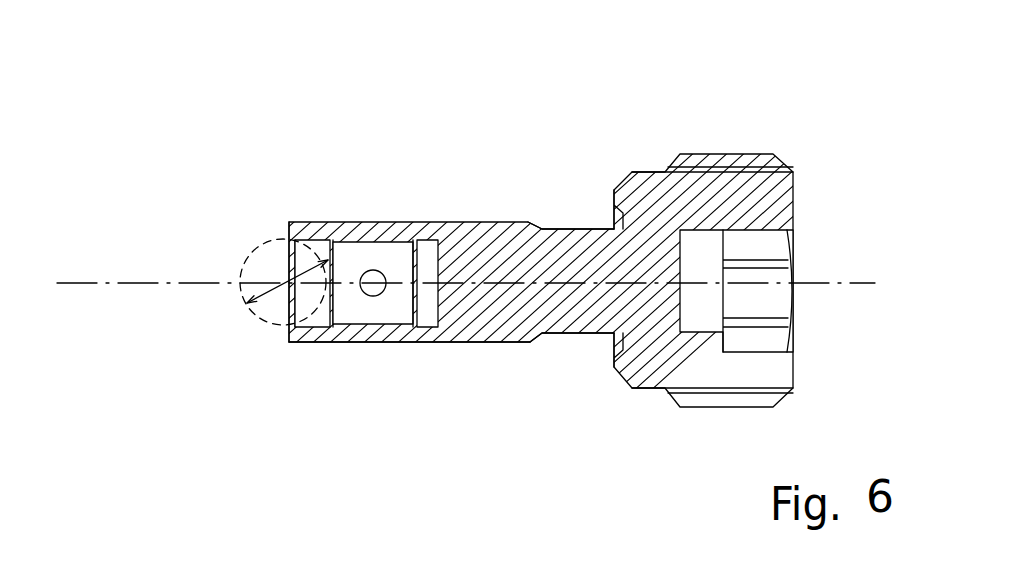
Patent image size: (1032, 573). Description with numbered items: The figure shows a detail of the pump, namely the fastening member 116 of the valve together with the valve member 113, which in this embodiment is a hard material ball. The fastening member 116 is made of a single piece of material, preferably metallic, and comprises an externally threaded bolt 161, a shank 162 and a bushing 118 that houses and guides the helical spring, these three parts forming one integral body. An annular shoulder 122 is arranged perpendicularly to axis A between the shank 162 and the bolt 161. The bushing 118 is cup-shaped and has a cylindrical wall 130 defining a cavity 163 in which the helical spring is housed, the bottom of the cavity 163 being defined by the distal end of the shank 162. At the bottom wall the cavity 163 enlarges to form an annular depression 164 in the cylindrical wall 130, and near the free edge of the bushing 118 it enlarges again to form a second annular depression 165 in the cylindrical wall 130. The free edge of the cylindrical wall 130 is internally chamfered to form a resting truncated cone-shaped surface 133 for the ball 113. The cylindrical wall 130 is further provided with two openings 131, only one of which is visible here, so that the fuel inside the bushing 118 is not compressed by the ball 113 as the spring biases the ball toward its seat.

The fastening member 116 is at (547, 123).
The bushing 118 is at (367, 230).
The annular shoulder 122 is at (614, 198).
The bolt 161 is at (760, 198).
The shank 162 is at (502, 313).
The cylindrical wall 130 is at (373, 332).
The openings 131 is at (382, 278).
The truncated cone-shaped surface 133 is at (297, 237).
The annular depression 165 is at (313, 305).
The cavity 163 is at (345, 252).
The annular depression 164 is at (429, 268).
The valve member 113 is at (250, 303).
The axis A is at (847, 280).